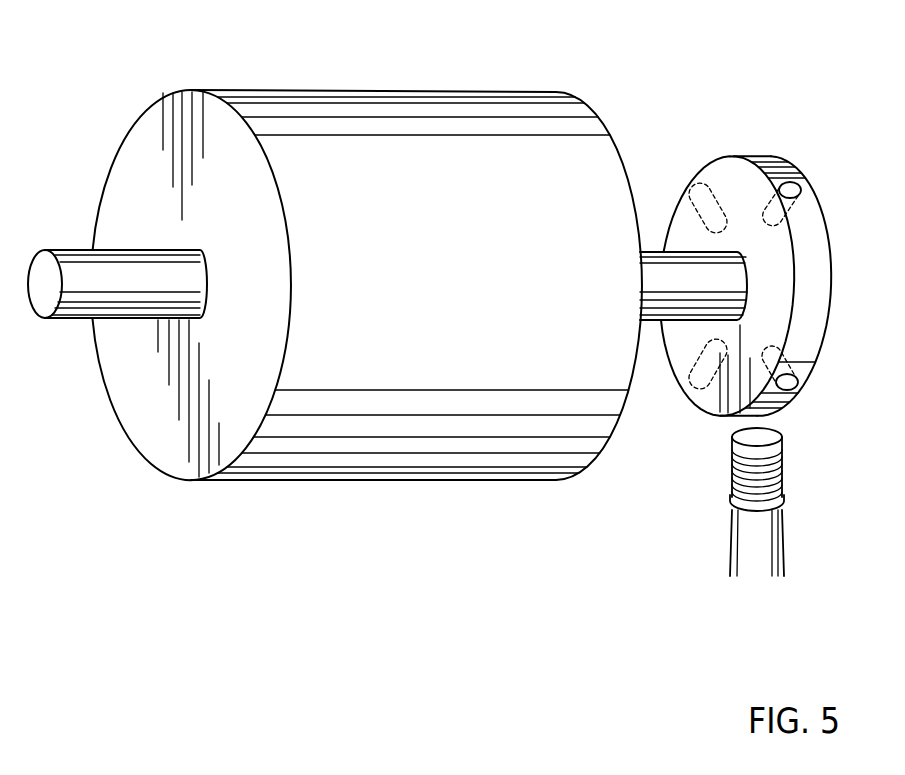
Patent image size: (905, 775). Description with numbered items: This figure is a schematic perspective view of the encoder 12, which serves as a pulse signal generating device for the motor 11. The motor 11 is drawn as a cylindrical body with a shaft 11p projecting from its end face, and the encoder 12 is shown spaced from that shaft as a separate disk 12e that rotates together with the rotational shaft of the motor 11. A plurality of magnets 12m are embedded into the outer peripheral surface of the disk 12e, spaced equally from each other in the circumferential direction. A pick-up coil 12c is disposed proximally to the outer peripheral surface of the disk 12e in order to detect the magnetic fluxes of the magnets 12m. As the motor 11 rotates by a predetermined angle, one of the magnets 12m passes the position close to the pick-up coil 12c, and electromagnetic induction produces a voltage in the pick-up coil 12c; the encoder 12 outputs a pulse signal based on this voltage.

The motor 11 is at (352, 112).
The rotor shaft 11p is at (645, 263).
The encoder 12 is at (836, 247).
The disk 12e is at (727, 181).
The magnets 12m is at (793, 180).
The pick-up coil 12c is at (783, 472).